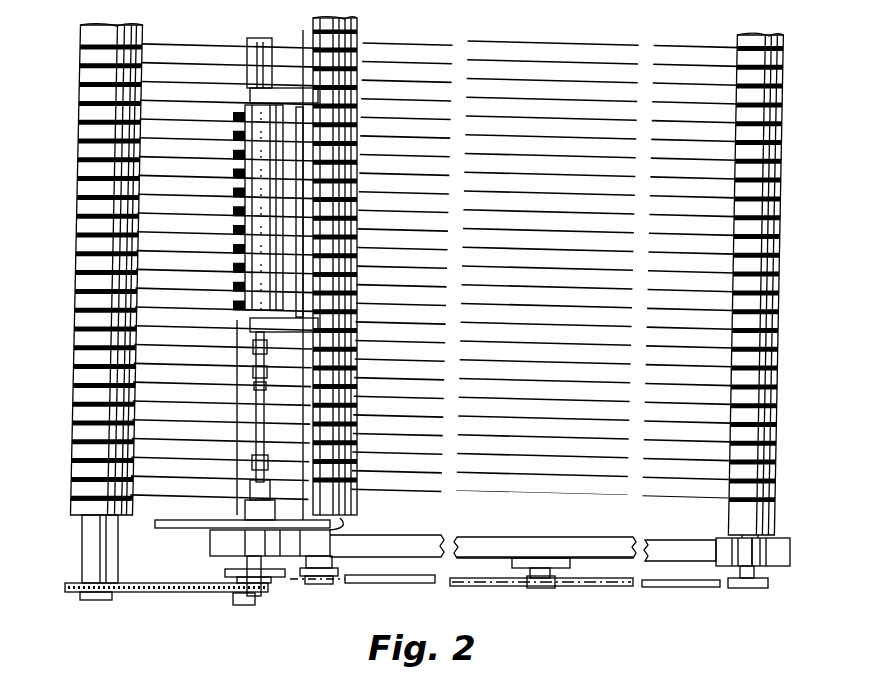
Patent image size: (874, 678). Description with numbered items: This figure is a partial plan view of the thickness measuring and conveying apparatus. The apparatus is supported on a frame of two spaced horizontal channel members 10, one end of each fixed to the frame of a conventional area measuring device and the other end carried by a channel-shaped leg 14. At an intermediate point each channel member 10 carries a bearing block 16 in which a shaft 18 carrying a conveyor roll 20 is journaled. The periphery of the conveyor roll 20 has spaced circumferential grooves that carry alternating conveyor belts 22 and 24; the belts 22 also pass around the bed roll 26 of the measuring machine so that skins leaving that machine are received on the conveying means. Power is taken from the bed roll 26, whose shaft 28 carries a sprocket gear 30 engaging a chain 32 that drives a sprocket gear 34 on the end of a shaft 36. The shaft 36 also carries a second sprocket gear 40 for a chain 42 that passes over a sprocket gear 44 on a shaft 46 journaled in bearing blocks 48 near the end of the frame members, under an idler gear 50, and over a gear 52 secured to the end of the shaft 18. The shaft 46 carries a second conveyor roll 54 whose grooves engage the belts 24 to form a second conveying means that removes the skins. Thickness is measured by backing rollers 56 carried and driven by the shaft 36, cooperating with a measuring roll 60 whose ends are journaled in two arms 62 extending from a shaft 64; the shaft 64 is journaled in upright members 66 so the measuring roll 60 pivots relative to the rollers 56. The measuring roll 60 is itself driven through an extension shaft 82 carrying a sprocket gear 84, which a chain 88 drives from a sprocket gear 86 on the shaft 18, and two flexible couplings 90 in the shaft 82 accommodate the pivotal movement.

The channel member 10 is at (478, 550).
The leg 14 is at (775, 552).
The bearing block 16 is at (365, 550).
The shaft 18 is at (345, 520).
The conveyor roll 20 is at (364, 488).
The conveyor belt 22 is at (192, 62).
The conveyor belt 24 is at (528, 82).
The bed roll 26 is at (76, 510).
The shaft 28 is at (92, 566).
The sprocket gear 30 is at (80, 600).
The chain 32 is at (165, 592).
The sprocket gear 34 is at (252, 598).
The shaft 36 is at (245, 506).
The second sprocket gear 40 is at (215, 598).
The chain 42 is at (594, 586).
The sprocket gear 44 is at (768, 583).
The shaft 46 is at (735, 576).
The bearing block 48 is at (716, 548).
The idler gear 50 is at (534, 588).
The gear 52 is at (322, 585).
The conveyor roll 54 is at (783, 470).
The backing roller 56 is at (240, 213).
The measuring roll 60 is at (235, 170).
The arm 62 is at (250, 96).
The shaft 64 is at (318, 45).
The upright member 66 is at (210, 528).
The extension shaft 82 is at (254, 388).
The sprocket gear 84 is at (240, 556).
The sprocket gear 86 is at (350, 572).
The chain 88 is at (255, 604).
The flexible coupling 90 is at (255, 372).